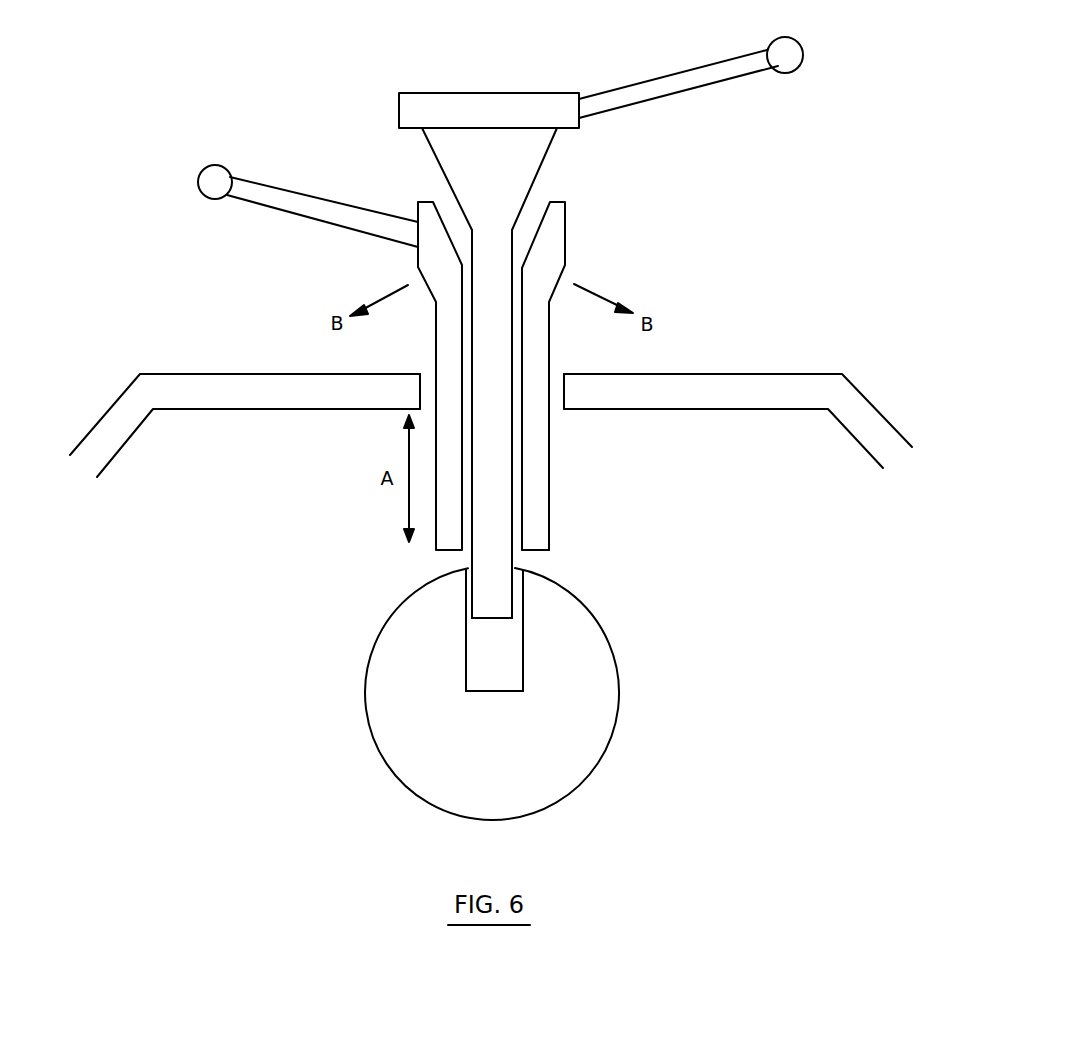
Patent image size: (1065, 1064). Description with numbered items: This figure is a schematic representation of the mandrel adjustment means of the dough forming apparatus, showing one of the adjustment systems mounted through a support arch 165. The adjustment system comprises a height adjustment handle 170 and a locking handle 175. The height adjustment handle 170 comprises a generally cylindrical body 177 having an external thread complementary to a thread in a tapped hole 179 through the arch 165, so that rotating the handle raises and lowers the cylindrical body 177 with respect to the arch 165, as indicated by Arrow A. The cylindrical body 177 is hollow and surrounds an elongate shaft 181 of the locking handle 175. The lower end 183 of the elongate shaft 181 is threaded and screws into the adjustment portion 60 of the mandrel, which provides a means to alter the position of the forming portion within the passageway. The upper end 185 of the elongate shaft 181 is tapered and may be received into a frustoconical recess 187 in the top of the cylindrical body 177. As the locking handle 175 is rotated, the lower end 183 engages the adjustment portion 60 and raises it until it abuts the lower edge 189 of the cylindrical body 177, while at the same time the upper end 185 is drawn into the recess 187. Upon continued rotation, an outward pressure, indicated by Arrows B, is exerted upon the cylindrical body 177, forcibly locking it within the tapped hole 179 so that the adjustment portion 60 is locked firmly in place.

The adjustment portion 60 is at (607, 692).
The support arch 165 is at (789, 374).
The height adjustment handle 170 is at (123, 143).
The locking handle 175 is at (579, 62).
The cylindrical body 177 is at (537, 363).
The tapped hole 179 is at (562, 406).
The elongate shaft 181 is at (507, 287).
The lower end 183 is at (480, 598).
The upper end 185 is at (528, 163).
The frustoconical recess 187 is at (427, 195).
The lower edge 189 is at (537, 552).